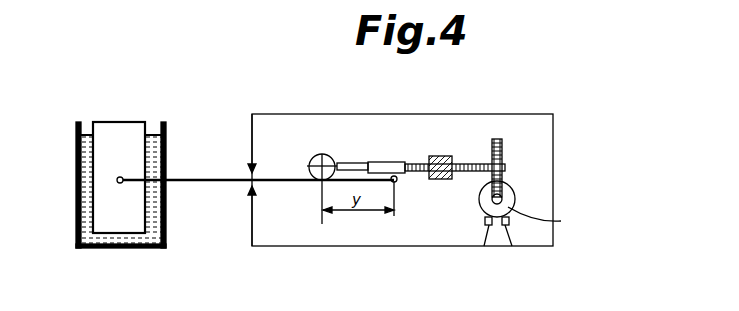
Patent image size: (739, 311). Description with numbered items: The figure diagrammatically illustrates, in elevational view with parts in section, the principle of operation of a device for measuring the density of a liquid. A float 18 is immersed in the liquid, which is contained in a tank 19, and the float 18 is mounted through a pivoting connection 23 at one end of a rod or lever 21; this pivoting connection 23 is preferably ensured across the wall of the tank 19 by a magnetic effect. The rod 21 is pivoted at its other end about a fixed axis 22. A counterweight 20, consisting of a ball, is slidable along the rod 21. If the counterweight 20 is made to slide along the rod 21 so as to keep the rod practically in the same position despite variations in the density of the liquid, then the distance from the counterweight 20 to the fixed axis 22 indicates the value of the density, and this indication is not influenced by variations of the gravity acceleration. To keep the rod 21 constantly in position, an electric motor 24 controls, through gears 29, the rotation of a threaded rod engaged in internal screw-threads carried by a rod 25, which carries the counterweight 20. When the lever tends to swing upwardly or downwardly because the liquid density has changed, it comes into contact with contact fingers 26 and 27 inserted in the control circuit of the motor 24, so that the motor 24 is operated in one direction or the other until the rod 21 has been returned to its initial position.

The float 18 is at (123, 131).
The tank 19 is at (166, 128).
The counterweight 20 is at (325, 160).
The rod or lever 21 is at (219, 181).
The fixed axis 22 is at (397, 181).
The pivoting connection 23 is at (120, 184).
The electric motor 24 is at (511, 200).
The rod carrying internal screw-threads 25 is at (376, 162).
The contact finger 26 is at (255, 169).
The contact finger 27 is at (255, 187).
The gears 29 is at (490, 176).